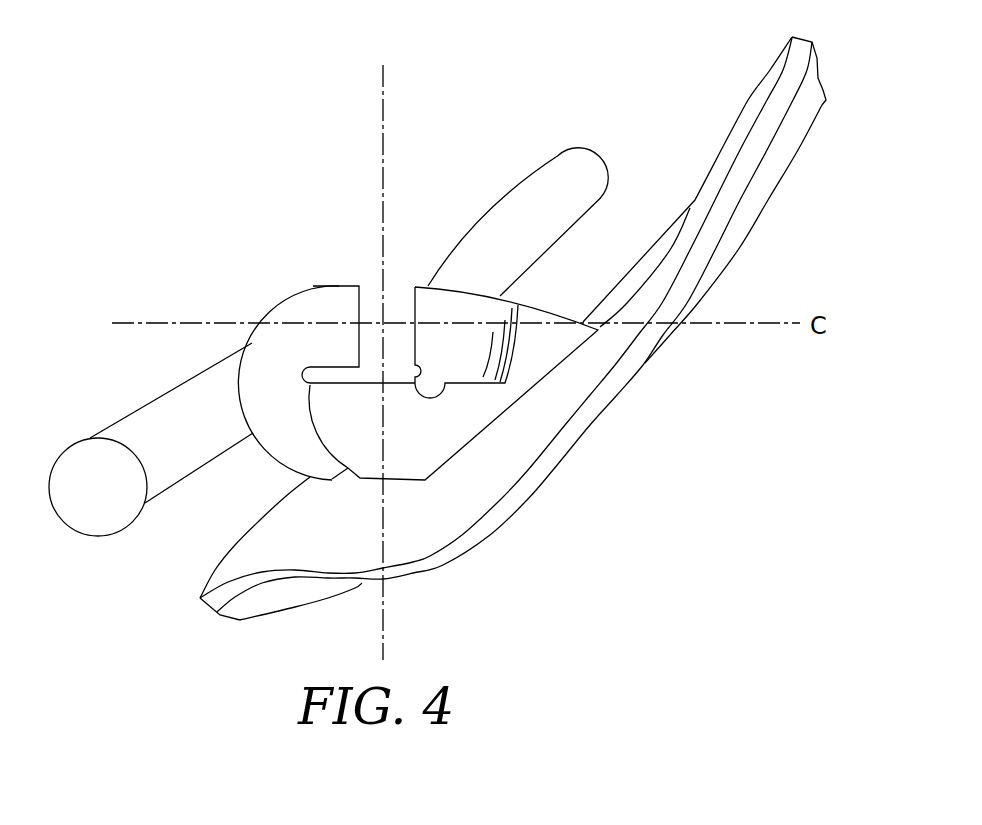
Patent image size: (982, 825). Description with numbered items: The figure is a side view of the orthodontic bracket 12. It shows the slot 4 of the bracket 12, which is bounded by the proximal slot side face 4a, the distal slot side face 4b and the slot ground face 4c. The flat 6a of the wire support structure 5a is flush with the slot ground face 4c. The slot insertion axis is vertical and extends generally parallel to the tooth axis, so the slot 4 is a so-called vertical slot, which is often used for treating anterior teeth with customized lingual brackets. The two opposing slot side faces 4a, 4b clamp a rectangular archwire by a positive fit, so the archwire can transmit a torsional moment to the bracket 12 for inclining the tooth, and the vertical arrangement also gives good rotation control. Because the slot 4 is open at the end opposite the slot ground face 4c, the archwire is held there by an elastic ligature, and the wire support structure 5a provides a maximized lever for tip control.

The slot 4 is at (377, 290).
The proximal slot side face 4a is at (415, 287).
The distal slot side face 4b is at (362, 303).
The slot ground face 4c is at (388, 383).
The wire support structure 5a is at (348, 423).
The flat 6a is at (340, 380).
The bracket 12 is at (555, 468).